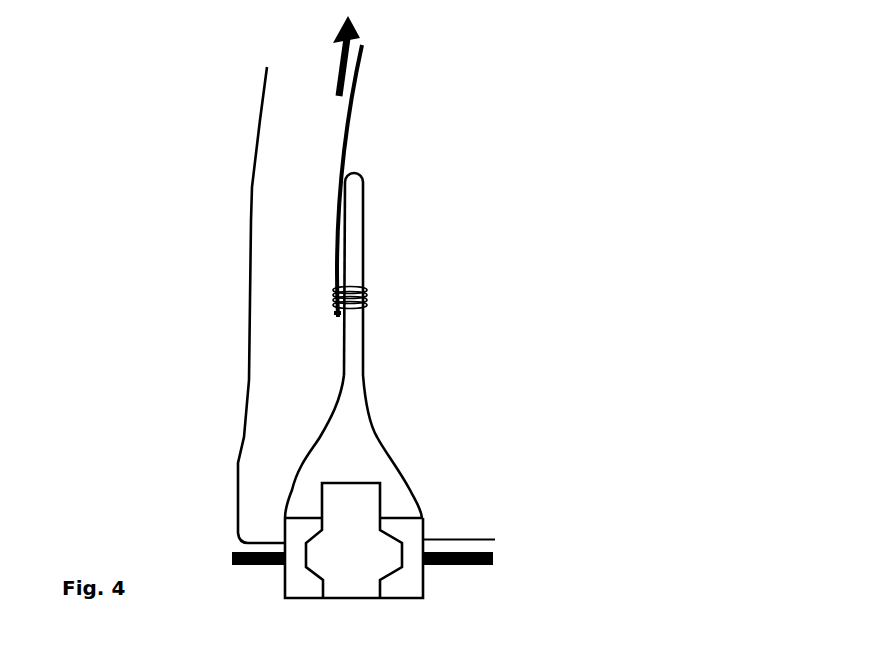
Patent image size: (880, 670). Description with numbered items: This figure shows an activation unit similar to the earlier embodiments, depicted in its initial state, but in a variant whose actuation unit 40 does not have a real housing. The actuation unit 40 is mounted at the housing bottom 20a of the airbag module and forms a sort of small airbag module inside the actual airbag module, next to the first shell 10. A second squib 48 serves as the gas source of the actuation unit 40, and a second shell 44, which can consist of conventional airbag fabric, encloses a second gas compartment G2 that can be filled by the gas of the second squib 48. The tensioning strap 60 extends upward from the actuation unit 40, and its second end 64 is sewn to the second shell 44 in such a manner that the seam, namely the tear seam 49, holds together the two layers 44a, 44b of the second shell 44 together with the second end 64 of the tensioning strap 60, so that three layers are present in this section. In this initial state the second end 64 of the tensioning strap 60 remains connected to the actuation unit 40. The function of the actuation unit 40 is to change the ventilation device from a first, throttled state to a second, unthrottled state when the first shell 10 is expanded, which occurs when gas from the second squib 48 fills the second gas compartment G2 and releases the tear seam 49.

The first shell 10 is at (250, 213).
The tensioning strap 60 is at (357, 93).
The second end of the tensioning strap 64 is at (333, 315).
The second shell 44 is at (310, 327).
The first layer of the second shell 44a is at (343, 257).
The second layer of the second shell 44b is at (363, 257).
The tear seam 49 is at (362, 290).
The second gas compartment G2 is at (355, 455).
The actuation unit 40 is at (300, 577).
The second squib 48 is at (373, 495).
The housing bottom 20a is at (462, 565).